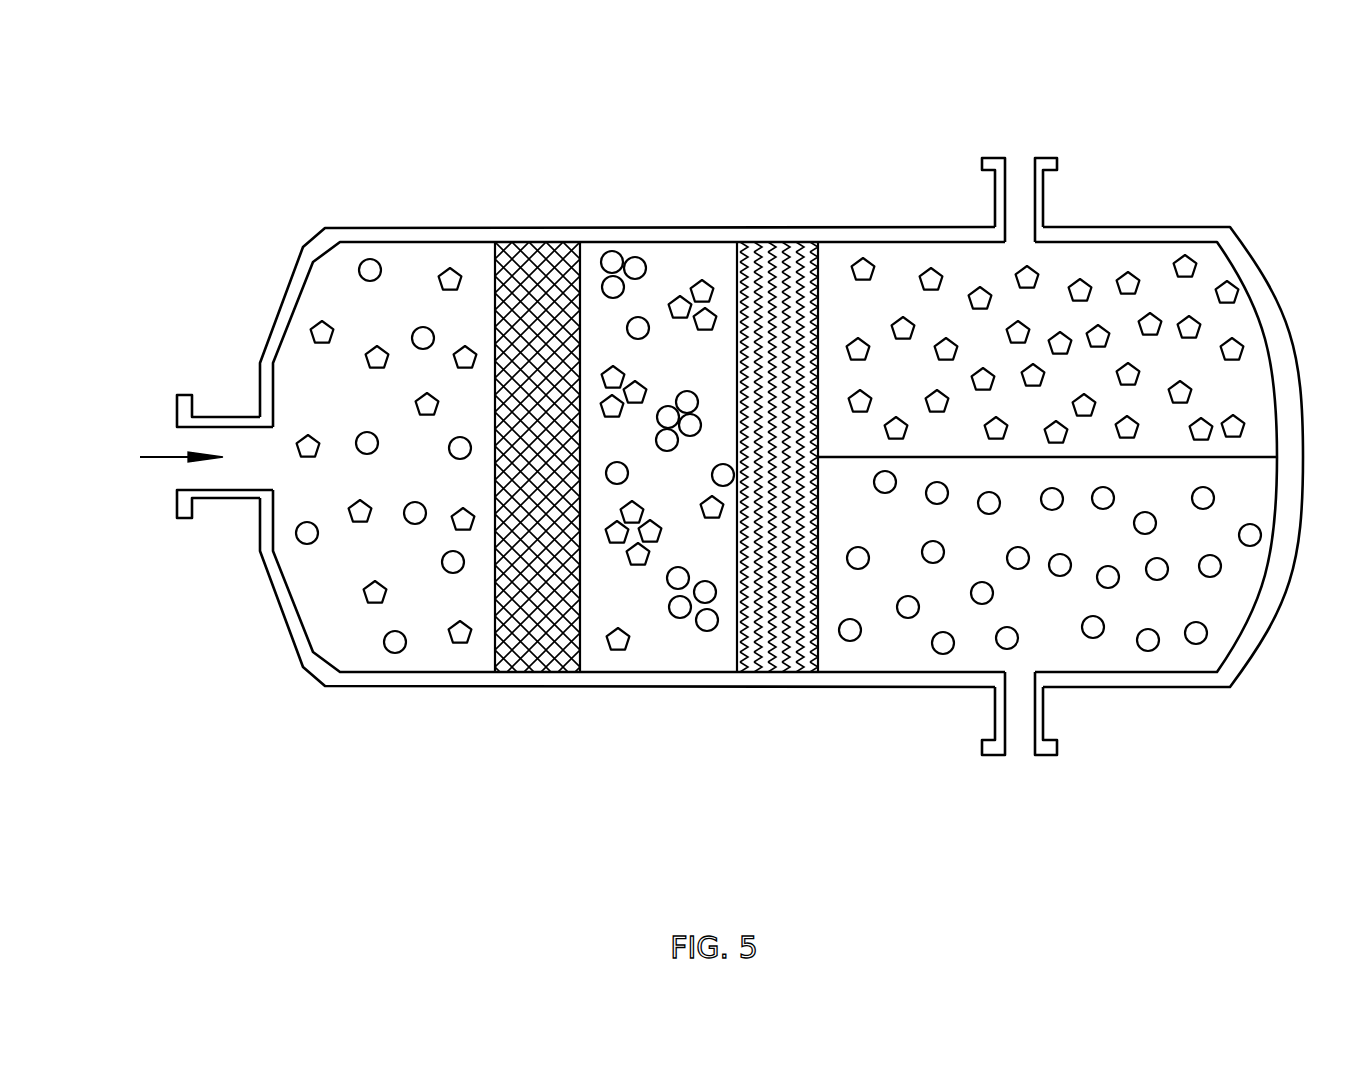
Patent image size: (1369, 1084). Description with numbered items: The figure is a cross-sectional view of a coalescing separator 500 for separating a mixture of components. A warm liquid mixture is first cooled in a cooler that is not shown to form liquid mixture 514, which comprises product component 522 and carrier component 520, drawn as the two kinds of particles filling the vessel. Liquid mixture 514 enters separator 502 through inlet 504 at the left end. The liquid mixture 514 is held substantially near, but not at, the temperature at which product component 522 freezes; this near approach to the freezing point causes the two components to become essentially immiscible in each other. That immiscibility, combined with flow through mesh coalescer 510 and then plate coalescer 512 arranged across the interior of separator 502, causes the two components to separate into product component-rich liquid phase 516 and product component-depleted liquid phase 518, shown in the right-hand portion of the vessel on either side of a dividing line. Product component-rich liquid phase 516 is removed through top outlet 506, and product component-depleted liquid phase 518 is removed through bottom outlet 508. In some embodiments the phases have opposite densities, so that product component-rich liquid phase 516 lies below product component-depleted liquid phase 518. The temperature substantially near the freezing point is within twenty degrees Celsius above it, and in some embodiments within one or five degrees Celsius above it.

The coalescing separator 500 is at (168, 96).
The separator 502 is at (278, 603).
The inlet 504 is at (220, 415).
The top outlet 506 is at (1045, 197).
The bottom outlet 508 is at (1047, 720).
The mesh coalescer 510 is at (530, 242).
The plate coalescer 512 is at (777, 242).
The liquid mixture 514 is at (148, 457).
The product component-rich liquid phase 516 is at (1020, 172).
The product component-depleted liquid phase 518 is at (1020, 740).
The carrier component 520 is at (366, 259).
The product component 522 is at (458, 647).